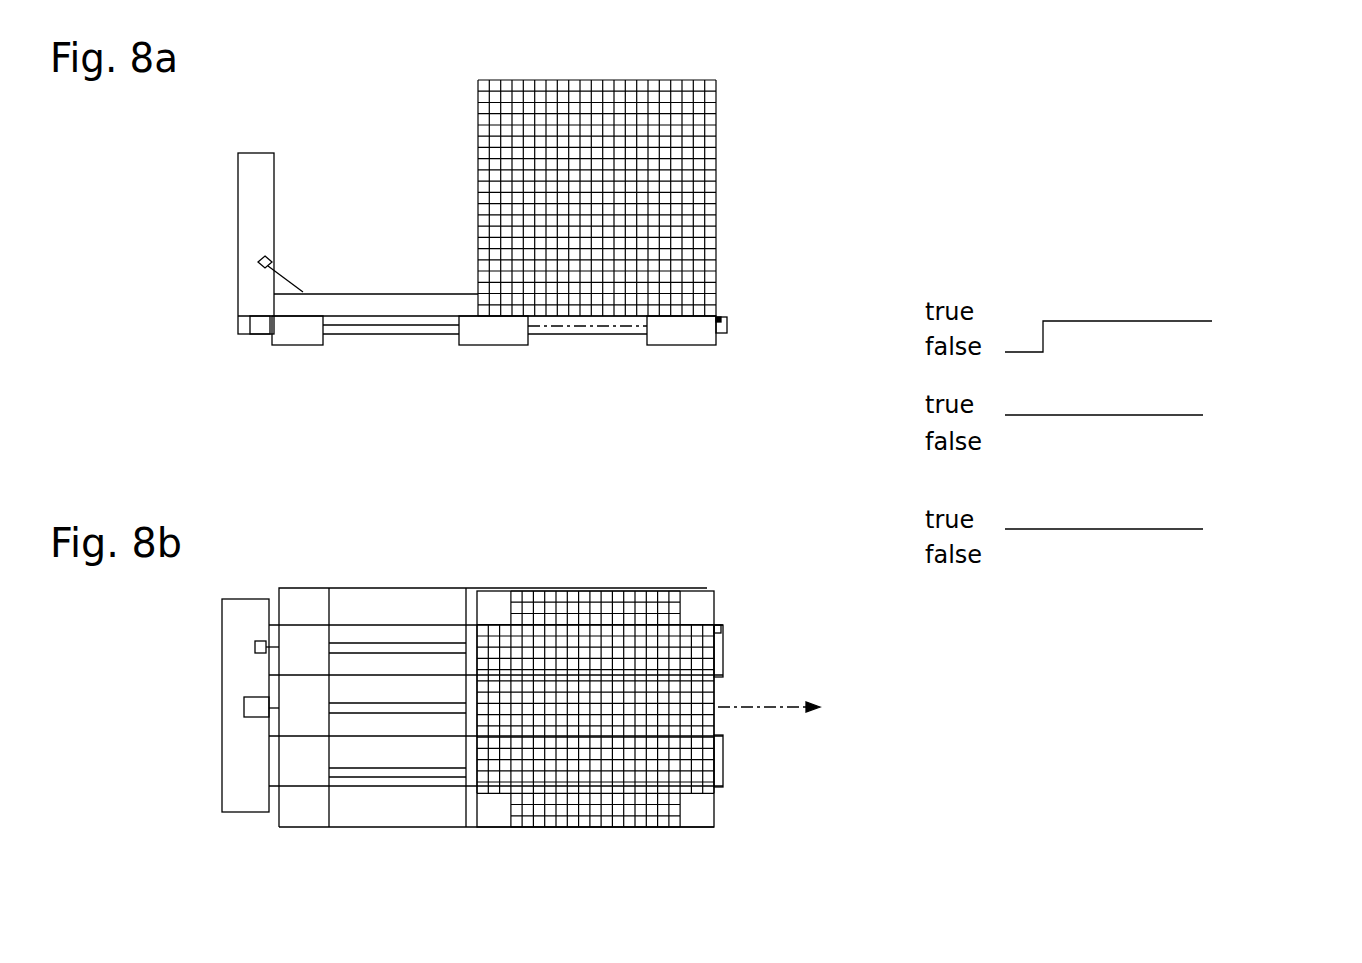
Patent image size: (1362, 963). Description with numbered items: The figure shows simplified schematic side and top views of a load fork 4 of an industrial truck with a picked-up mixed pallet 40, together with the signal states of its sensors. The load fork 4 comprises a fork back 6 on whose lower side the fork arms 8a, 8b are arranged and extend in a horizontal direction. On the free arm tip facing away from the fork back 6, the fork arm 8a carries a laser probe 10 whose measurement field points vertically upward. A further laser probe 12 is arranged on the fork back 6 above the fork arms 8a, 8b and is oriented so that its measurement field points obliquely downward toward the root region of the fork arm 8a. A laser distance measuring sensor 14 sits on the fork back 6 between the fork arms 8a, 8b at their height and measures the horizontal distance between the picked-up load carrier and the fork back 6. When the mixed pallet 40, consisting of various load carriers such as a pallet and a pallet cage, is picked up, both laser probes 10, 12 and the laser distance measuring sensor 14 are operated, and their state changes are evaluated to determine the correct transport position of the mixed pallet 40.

In FIG. 8a, the load fork 4 is at (336, 187).
In FIG. 8b, the load fork 4 is at (266, 571).
In FIG. 8a, the fork back 6 is at (262, 175).
In FIG. 8b, the fork back 6 is at (247, 614).
In FIG. 8a, the fork arm 8a is at (577, 330).
In FIG. 8b, the fork arm 8a is at (724, 660).
In FIG. 8b, the fork arm 8b is at (724, 768).
In FIG. 8a, the laser probe 10 is at (722, 318).
In FIG. 8b, the laser probe 10 is at (722, 628).
In FIG. 8a, the laser probe 12 is at (272, 260).
In FIG. 8b, the laser probe 12 is at (255, 647).
In FIG. 8a, the laser distance measuring sensor 14 is at (262, 337).
In FIG. 8b, the laser distance measuring sensor 14 is at (255, 718).
In FIG. 8a, the mixed pallet 40 is at (610, 117).
In FIG. 8b, the mixed pallet 40 is at (610, 615).